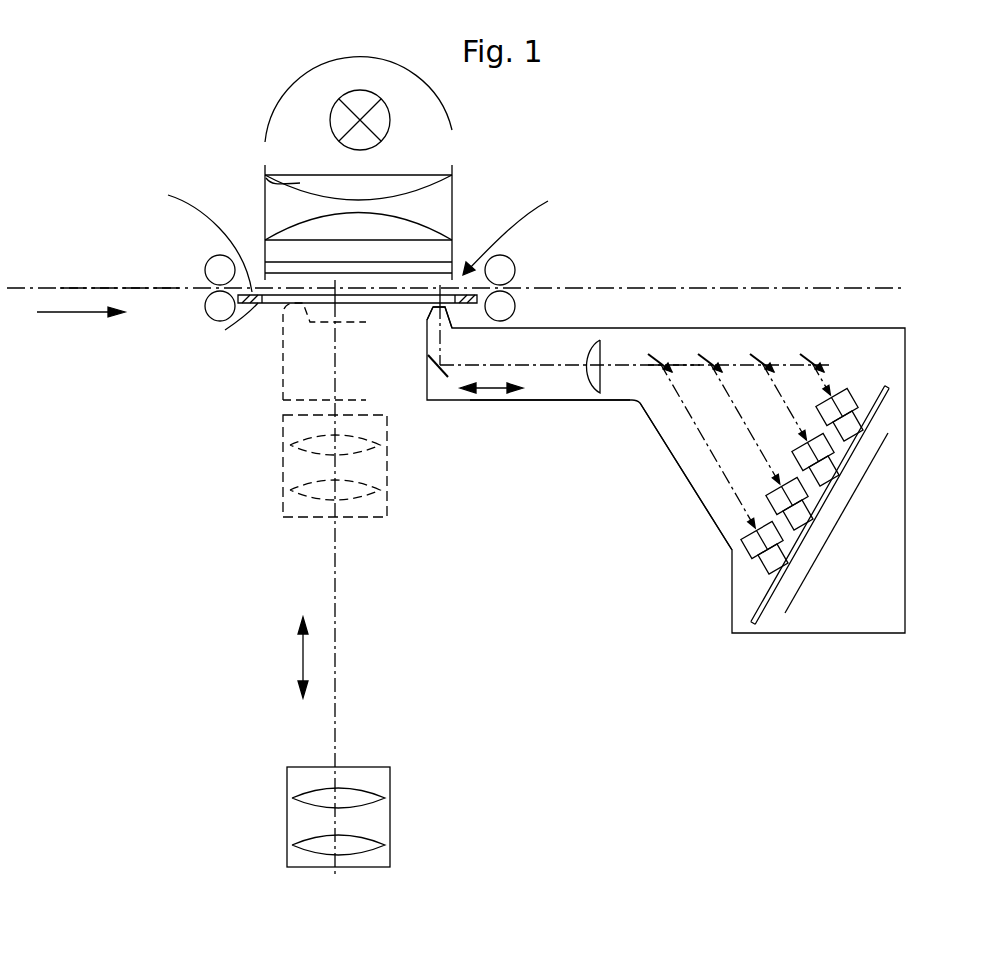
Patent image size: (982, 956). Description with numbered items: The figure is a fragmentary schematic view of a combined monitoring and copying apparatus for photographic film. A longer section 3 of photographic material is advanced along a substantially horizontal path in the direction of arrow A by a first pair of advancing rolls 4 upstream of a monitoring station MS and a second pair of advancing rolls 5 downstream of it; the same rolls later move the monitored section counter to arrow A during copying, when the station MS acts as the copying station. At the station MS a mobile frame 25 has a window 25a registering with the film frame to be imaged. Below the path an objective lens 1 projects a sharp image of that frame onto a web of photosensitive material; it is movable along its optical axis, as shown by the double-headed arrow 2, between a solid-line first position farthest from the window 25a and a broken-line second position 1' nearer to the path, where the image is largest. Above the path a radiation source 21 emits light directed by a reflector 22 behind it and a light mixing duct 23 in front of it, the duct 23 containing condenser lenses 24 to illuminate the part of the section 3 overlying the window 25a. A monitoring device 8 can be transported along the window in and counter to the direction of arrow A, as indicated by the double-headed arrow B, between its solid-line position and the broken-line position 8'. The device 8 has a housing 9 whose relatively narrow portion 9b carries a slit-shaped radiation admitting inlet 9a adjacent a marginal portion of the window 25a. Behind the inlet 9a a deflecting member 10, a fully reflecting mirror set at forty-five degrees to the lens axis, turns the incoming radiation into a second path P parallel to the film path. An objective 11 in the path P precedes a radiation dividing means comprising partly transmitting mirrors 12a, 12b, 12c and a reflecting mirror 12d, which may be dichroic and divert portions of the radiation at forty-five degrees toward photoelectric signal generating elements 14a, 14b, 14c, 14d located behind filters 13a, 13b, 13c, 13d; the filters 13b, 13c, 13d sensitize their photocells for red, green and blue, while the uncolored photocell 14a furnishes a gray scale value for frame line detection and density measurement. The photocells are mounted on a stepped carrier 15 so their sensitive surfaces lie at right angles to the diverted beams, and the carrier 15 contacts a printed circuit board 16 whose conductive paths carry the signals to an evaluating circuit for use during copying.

The objective lens 1 is at (310, 817).
The second position of objective lens 1' is at (307, 466).
The double-headed arrow 2 is at (300, 660).
The longer section of photographic material 3 is at (120, 287).
The first pair of advancing rolls 4 is at (208, 265).
The second pair of advancing rolls 5 is at (511, 270).
The monitoring device 8 is at (666, 470).
The broken-line position of monitoring device 8' is at (296, 351).
The housing 9 is at (669, 452).
The radiation admitting inlet 9a is at (433, 310).
The narrow portion of housing 9b is at (547, 402).
The deflecting member 10 is at (436, 403).
The objective 11 is at (600, 338).
The partly transmitting mirror 12a is at (660, 354).
The partly transmitting mirror 12b is at (710, 354).
The partly transmitting mirror 12c is at (762, 354).
The reflecting mirror 12d is at (812, 354).
The filter 13a is at (792, 578).
The filter 13b is at (814, 533).
The filter 13c is at (836, 488).
The filter 13d is at (860, 400).
The photoelectric signal generating element 14a is at (796, 602).
The photoelectric signal generating element 14b is at (818, 557).
The photoelectric signal generating element 14c is at (840, 512).
The photoelectric signal generating element 14d is at (864, 430).
The stepped carrier 15 is at (768, 578).
The printed circuit board 16 is at (752, 618).
The radiation source 21 is at (381, 127).
The reflector 22 is at (436, 97).
The light mixing duct 23 is at (454, 200).
The condenser lens 24 is at (266, 195).
The mobile frame 25 is at (197, 229).
The window 25a is at (225, 330).
The direction of advancement A is at (62, 313).
The double-headed arrow B is at (490, 393).
The monitoring station MS is at (523, 226).
The second path P is at (646, 367).